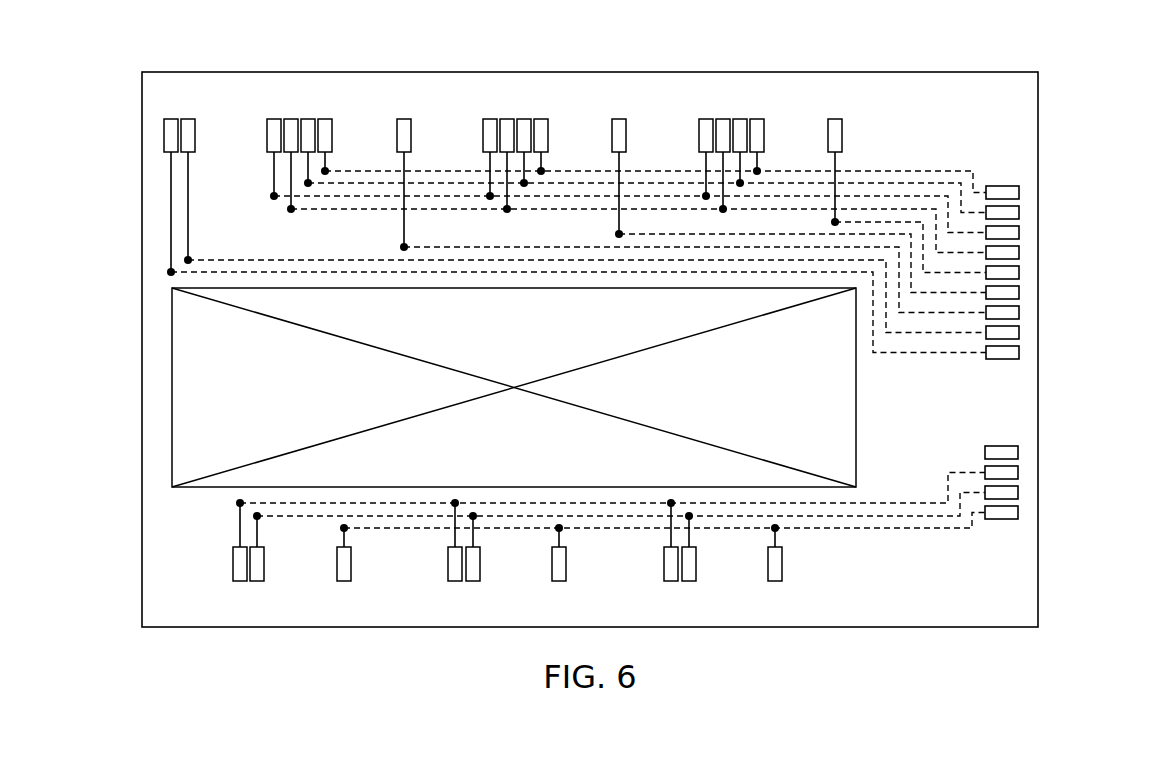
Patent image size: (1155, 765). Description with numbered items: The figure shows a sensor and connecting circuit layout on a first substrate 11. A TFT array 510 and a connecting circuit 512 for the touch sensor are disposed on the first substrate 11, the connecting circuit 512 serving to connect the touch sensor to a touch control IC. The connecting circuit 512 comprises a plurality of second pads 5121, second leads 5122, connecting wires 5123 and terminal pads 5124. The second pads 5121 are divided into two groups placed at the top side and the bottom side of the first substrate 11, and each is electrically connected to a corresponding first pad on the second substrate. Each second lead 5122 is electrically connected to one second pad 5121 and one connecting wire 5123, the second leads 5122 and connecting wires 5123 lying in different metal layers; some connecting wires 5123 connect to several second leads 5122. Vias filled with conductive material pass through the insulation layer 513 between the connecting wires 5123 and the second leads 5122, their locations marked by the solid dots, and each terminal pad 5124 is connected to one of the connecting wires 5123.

The first substrate 11 is at (142, 162).
The TFT array 510 is at (499, 357).
The connecting circuit 512 is at (840, 89).
The insulation layer 513 is at (211, 237).
The second pads 5121 is at (277, 118).
The second leads 5122 is at (272, 174).
The connecting wires 5123 is at (356, 170).
The terminal pads 5124 is at (1019, 192).